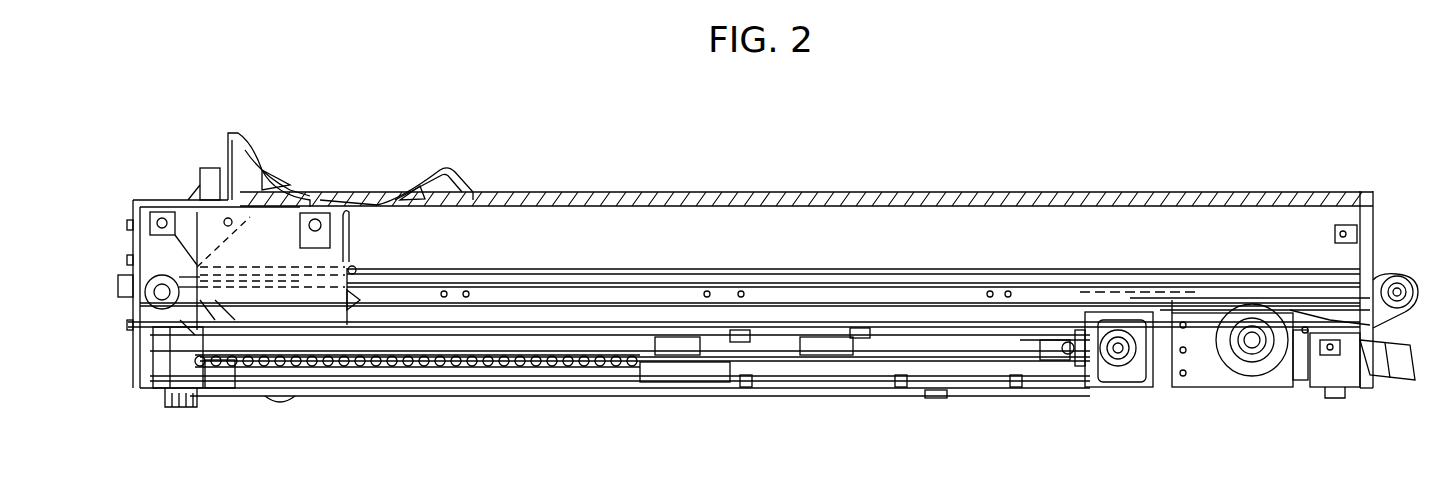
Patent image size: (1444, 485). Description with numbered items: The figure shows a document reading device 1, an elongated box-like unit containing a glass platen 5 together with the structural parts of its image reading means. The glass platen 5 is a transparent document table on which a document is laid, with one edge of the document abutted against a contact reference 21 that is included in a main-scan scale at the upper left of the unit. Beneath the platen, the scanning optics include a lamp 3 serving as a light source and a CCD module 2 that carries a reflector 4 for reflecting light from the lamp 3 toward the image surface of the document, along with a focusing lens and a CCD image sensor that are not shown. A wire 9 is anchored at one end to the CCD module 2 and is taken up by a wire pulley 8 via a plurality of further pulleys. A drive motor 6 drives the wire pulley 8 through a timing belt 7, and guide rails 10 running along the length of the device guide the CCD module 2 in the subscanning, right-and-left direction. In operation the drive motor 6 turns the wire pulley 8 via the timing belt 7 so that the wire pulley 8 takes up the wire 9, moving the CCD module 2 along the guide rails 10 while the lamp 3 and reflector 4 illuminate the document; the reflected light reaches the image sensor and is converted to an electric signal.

The document reading device 1 is at (376, 417).
The CCD module 2 is at (358, 260).
The lamp 3 is at (300, 225).
The reflector 4 is at (350, 217).
The glass platen 5 is at (716, 199).
The drive motor 6 is at (1137, 385).
The timing belt 7 is at (1197, 372).
The wire pulley 8 is at (1247, 377).
The wire 9 is at (1290, 302).
The guide rails 10 is at (832, 284).
The contact reference 21 is at (492, 187).